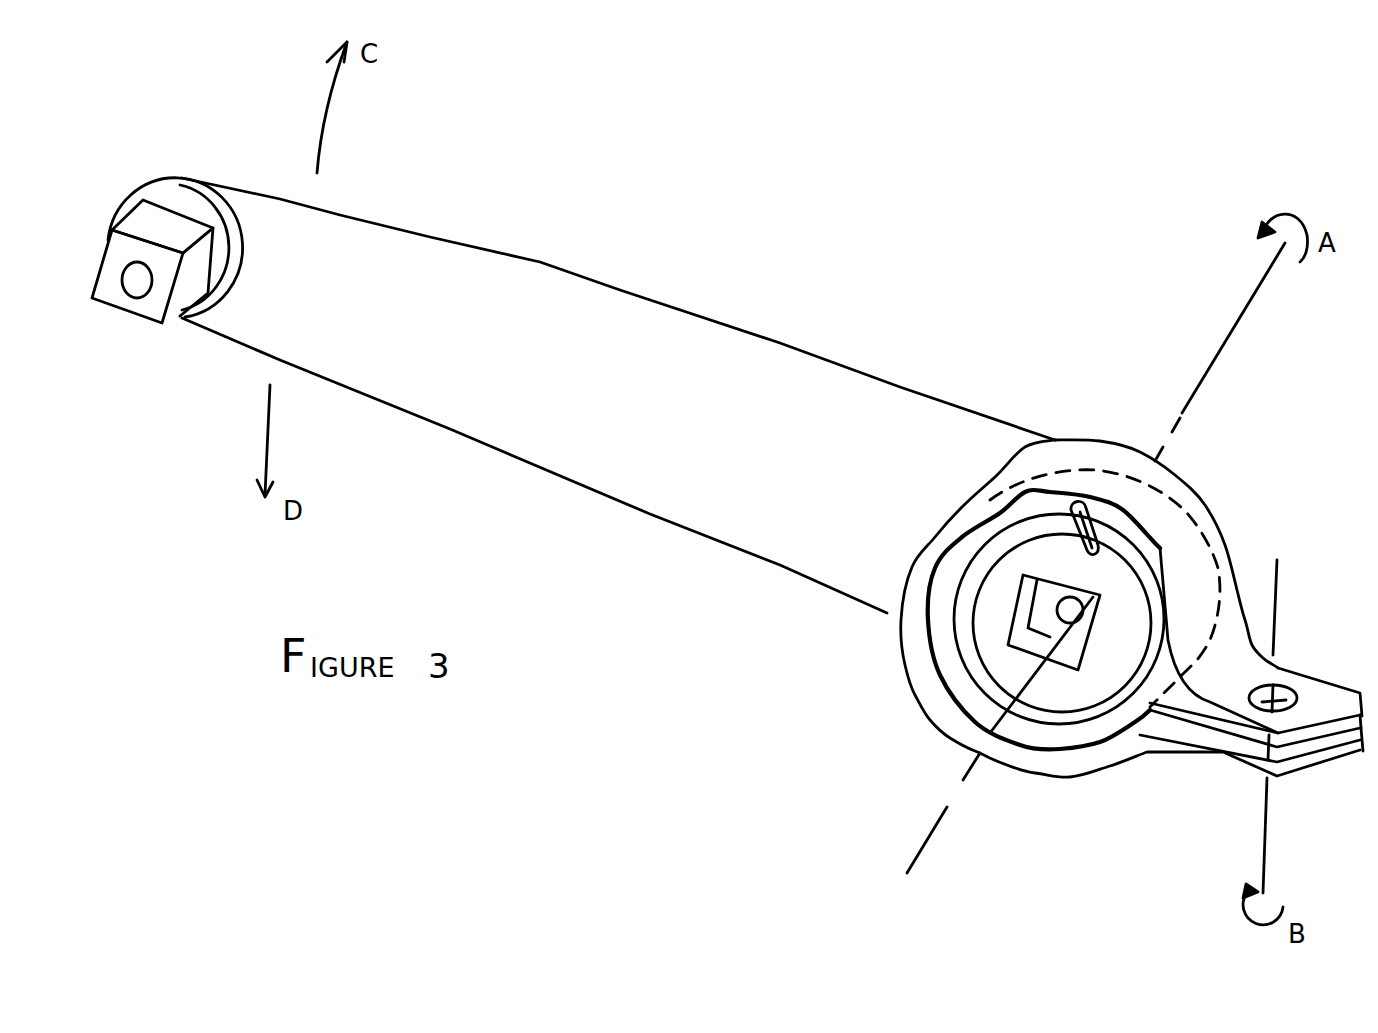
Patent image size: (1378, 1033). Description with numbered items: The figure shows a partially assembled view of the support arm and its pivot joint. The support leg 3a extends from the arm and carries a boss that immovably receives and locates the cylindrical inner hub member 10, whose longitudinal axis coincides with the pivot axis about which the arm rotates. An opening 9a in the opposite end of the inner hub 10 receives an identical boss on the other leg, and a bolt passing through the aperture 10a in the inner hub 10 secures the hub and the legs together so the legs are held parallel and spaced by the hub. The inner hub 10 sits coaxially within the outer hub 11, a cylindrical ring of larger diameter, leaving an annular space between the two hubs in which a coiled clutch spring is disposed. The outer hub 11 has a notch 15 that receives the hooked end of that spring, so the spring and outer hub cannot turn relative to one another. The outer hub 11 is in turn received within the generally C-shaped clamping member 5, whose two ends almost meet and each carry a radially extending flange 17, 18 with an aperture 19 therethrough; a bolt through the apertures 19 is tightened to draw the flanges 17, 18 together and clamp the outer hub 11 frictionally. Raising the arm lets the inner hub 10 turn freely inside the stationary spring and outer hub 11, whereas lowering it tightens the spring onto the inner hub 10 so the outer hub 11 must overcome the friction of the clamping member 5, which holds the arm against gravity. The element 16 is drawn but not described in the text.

The support leg 3a is at (576, 278).
The clamping member 5 is at (1095, 446).
The opening 9a is at (1020, 617).
The inner hub member 10 is at (1032, 700).
The aperture 10a is at (1075, 628).
The outer hub 11 is at (957, 675).
The notch 15 is at (1062, 540).
The ring body 16 is at (1080, 768).
The flange 17 is at (1315, 676).
The flange 18 is at (1223, 752).
The aperture 19 is at (1320, 763).